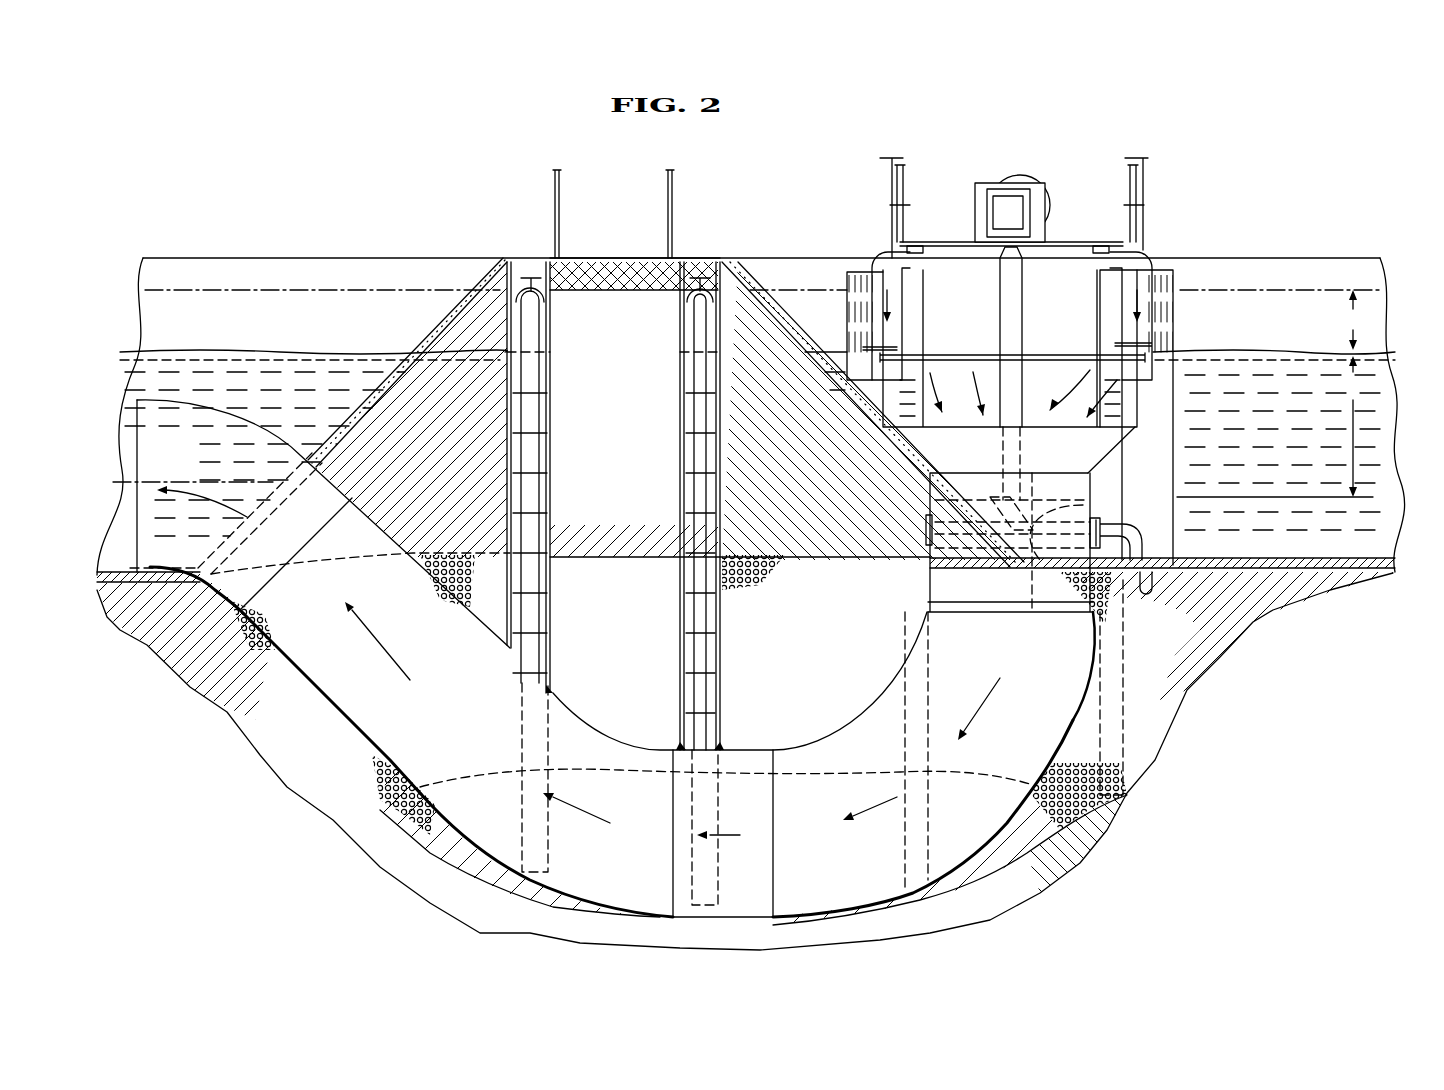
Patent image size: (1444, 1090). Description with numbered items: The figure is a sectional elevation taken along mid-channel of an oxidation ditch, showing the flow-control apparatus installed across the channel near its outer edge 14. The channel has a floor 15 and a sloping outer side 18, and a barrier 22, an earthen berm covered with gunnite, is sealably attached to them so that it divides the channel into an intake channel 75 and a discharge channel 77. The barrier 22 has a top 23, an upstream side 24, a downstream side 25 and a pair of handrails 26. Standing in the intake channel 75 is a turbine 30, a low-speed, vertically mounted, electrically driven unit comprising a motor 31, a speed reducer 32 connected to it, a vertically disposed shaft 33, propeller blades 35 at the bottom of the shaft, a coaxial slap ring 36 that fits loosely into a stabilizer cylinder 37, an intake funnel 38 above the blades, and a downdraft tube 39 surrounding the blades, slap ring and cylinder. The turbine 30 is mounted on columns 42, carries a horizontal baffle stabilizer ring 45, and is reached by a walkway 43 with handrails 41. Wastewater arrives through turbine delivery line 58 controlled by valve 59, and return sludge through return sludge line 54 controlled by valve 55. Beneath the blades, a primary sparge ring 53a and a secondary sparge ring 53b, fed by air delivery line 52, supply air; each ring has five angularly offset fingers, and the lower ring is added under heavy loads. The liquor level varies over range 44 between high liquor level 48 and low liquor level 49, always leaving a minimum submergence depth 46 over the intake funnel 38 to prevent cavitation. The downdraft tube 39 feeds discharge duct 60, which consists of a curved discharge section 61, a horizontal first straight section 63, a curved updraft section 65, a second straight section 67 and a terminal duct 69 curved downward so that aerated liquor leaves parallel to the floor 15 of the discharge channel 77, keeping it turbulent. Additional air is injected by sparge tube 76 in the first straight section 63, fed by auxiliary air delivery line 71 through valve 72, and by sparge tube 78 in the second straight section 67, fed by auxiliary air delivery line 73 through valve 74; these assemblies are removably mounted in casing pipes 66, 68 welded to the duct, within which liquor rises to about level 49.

The outer edge 14 is at (330, 258).
The floor 15 is at (150, 572).
The sloping outer side 18 is at (396, 323).
The barrier 22 is at (722, 245).
The top 23 is at (630, 258).
The upstream side 24 is at (740, 275).
The downstream side 25 is at (497, 278).
The handrails 26 is at (559, 188).
The turbine 30 is at (1155, 220).
The motor 31 is at (1044, 183).
The speed reducer 32 is at (1047, 233).
The shaft 33 is at (1022, 298).
The propeller blades 35 is at (1050, 493).
The slap ring 36 is at (988, 498).
The stabilizer cylinder 37 is at (1040, 605).
The intake funnel 38 is at (1117, 456).
The downdraft tube 39 is at (1100, 508).
The handrails 41 is at (904, 185).
The columns 42 is at (1124, 486).
The walkway 43 is at (948, 242).
The range 44 is at (1357, 320).
The baffle stabilizer ring 45 is at (1045, 355).
The minimum submergence depth 46 is at (1275, 426).
The high liquor level 48 is at (232, 290).
The low liquor level 49 is at (248, 352).
The air delivery line 52 is at (1152, 585).
The primary sparge ring 53a is at (1035, 548).
The secondary sparge ring 53b is at (1129, 687).
The return sludge line 54 is at (1145, 262).
The valve 55 is at (1140, 160).
The turbine delivery line 58 is at (888, 258).
The valve 59 is at (888, 160).
The discharge duct 60 is at (772, 727).
The curved discharge section 61 is at (1057, 745).
The first straight section 63 is at (753, 907).
The curved updraft section 65 is at (620, 897).
The casing pipe 66 is at (720, 440).
The second straight section 67 is at (370, 701).
The casing pipe 68 is at (549, 452).
The terminal duct 69 is at (165, 560).
The auxiliary air delivery line 71 is at (710, 470).
The valve 72 is at (700, 276).
The auxiliary air delivery line 73 is at (540, 408).
The valve 74 is at (528, 276).
The intake channel 75 is at (1398, 465).
The sparge tube 76 is at (718, 868).
The discharge channel 77 is at (132, 380).
The sparge tube 78 is at (548, 848).